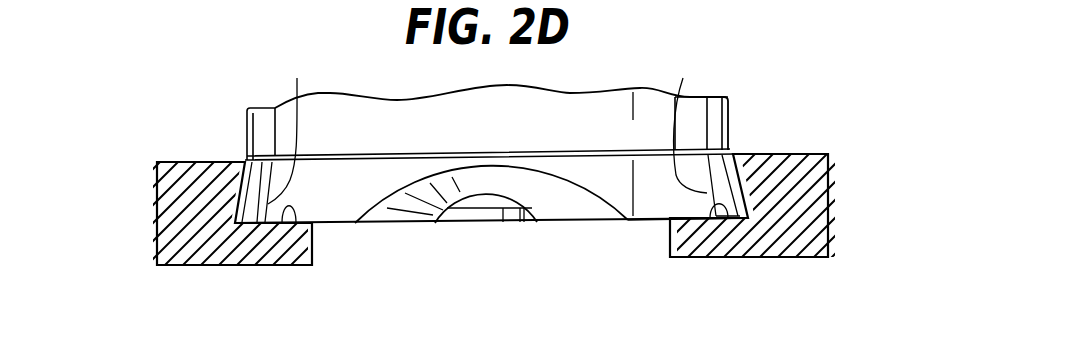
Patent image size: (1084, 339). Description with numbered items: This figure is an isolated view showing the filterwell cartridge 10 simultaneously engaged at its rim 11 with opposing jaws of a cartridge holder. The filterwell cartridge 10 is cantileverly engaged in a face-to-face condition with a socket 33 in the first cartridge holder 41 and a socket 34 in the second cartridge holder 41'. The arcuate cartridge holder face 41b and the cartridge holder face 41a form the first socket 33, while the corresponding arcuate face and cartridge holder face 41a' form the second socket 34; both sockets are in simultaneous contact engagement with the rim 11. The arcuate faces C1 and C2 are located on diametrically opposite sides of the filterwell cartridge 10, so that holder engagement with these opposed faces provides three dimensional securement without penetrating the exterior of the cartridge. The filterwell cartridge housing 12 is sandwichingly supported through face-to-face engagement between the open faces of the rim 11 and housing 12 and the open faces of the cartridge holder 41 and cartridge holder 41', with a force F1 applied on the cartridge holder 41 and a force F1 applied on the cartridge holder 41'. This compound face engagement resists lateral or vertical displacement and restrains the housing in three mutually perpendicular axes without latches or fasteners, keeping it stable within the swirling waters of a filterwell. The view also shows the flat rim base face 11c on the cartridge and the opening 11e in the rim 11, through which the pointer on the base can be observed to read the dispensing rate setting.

The filterwell cartridge 10 is at (735, 90).
The rim 11 is at (337, 208).
The flat rim base face 11c is at (630, 226).
The opening 11e is at (483, 203).
The filterwell cartridge housing 12 is at (587, 110).
The socket 33 is at (748, 138).
The socket 34 is at (222, 133).
The cartridge holder 41 is at (540, 205).
The cartridge holder 41' is at (535, 205).
The cartridge holder face 41a is at (739, 255).
The cartridge holder face 41a' is at (276, 258).
The arcuate cartridge holder face 41b is at (274, 140).
The arcuate face C1 is at (291, 125).
The arcuate face C2 is at (692, 121).
The force F1 is at (873, 228).